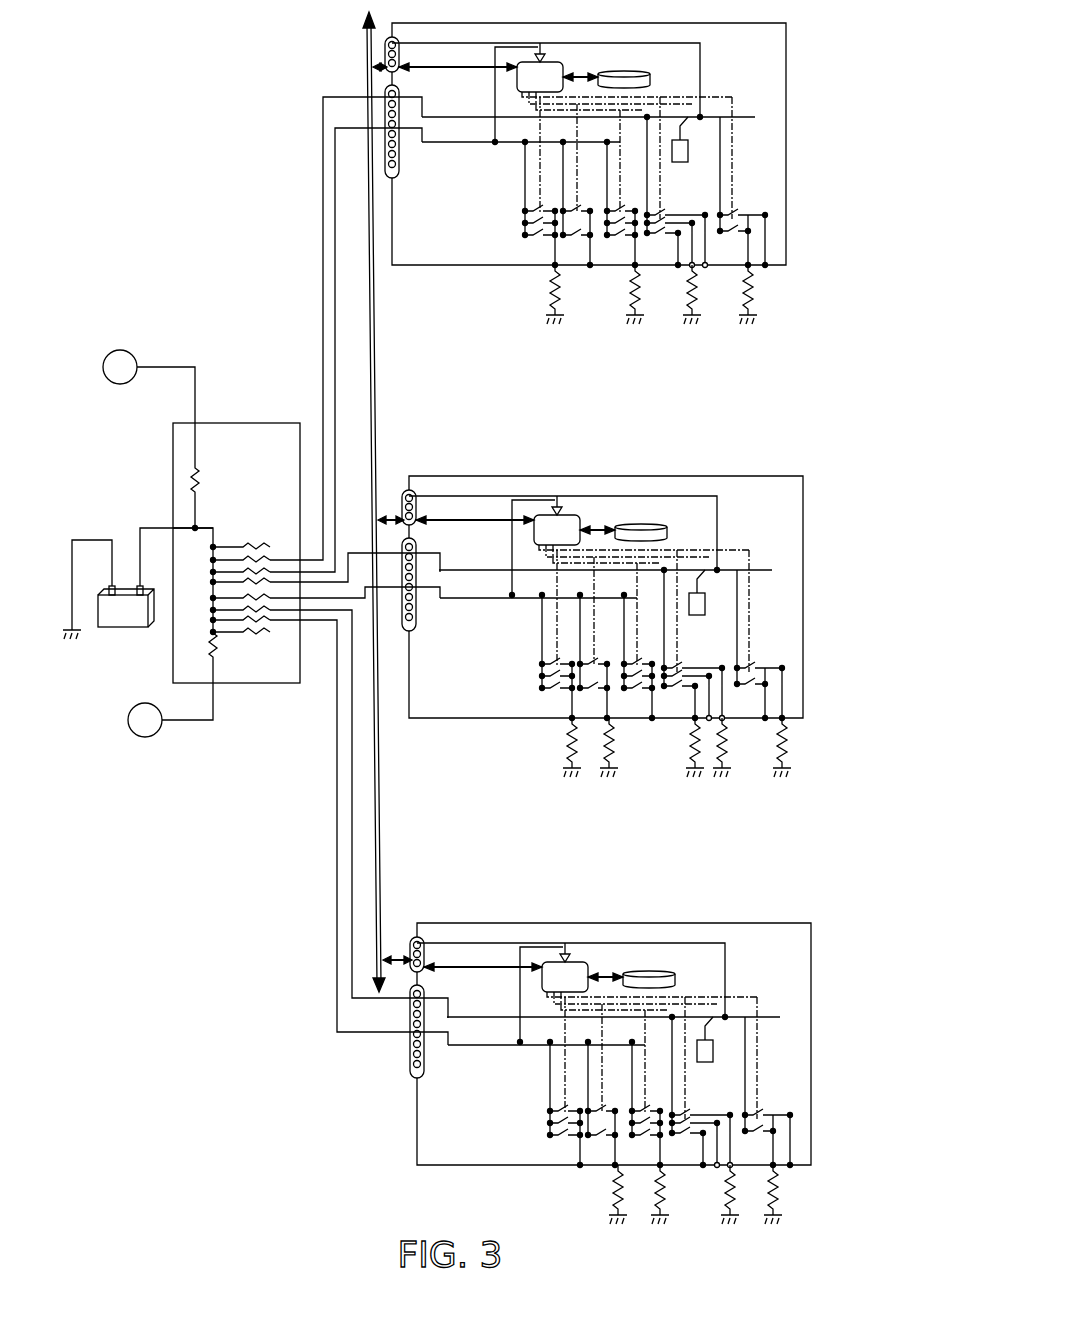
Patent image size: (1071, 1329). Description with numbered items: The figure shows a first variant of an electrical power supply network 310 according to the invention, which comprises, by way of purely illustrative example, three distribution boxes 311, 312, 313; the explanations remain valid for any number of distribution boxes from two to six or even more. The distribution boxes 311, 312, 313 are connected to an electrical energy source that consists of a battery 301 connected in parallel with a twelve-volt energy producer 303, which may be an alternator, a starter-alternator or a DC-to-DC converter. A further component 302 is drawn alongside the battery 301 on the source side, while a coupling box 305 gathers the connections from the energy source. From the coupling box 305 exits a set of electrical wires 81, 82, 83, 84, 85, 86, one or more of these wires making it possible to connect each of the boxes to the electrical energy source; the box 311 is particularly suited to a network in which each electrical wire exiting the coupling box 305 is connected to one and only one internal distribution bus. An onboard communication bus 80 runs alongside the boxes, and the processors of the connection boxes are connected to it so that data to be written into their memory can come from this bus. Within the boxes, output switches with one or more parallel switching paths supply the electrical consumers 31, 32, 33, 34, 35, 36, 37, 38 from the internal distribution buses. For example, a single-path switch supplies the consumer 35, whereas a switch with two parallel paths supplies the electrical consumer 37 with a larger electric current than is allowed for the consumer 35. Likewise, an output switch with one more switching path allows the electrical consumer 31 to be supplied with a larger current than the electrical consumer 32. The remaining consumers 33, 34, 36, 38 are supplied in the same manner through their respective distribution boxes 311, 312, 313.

The electrical power supply network 310 is at (210, 168).
The battery 301 is at (128, 627).
The alternator 302 is at (123, 352).
The energy producer 303 is at (160, 739).
The coupling box 305 is at (237, 423).
The onboard communication bus 80 is at (374, 422).
The electrical wire 81 is at (321, 287).
The electrical wire 82 is at (336, 385).
The electrical wire 83 is at (353, 546).
The electrical wire 84 is at (356, 604).
The electrical wire 85 is at (392, 998).
The electrical wire 86 is at (336, 850).
The distribution box 311 is at (446, 265).
The distribution box 312 is at (440, 719).
The distribution box 313 is at (417, 1120).
The electrical consumer 31 is at (542, 287).
The electrical consumer 32 is at (615, 743).
The electrical consumer 33 is at (623, 288).
The electrical consumer 34 is at (693, 744).
The consumer 35 is at (687, 291).
The electrical consumer 36 is at (726, 748).
The electrical consumer 37 is at (752, 283).
The electrical consumer 38 is at (790, 743).